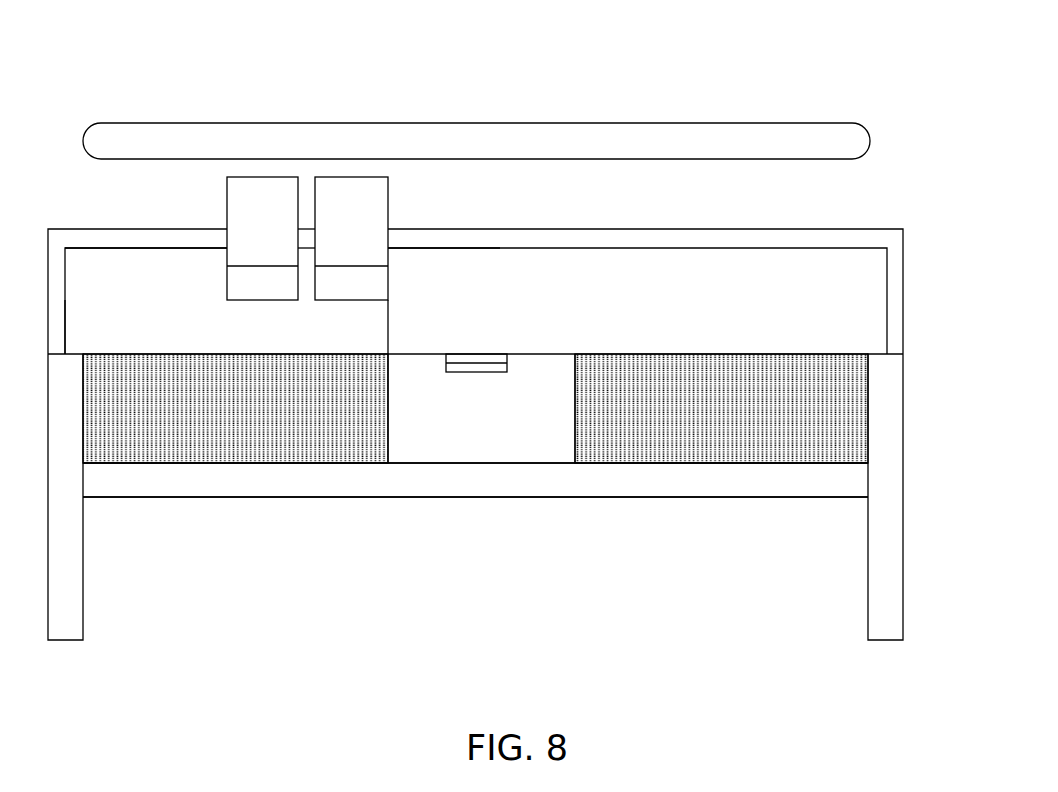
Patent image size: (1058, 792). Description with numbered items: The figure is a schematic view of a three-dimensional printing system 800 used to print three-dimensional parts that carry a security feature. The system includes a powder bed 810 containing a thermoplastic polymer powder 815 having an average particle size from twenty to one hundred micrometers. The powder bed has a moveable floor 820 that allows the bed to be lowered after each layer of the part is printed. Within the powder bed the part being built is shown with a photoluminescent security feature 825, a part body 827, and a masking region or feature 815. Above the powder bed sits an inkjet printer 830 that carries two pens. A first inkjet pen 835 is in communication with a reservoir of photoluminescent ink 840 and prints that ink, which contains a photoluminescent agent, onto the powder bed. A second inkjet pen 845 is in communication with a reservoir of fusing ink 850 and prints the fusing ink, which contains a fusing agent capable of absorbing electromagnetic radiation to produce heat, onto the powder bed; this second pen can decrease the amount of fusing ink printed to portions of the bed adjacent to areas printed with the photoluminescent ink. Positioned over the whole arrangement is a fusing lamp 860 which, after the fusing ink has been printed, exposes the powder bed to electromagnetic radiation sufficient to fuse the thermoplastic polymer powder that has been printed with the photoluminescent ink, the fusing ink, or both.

The 3-dimensional printing system 800 is at (153, 56).
The powder bed 810 is at (777, 527).
The thermoplastic polymer powder 815 is at (463, 360).
The moveable floor 820 is at (602, 480).
The photoluminescent security feature 825 is at (495, 369).
The part body 827 is at (535, 377).
The inkjet printer 830 is at (870, 210).
The first inkjet pen 835 is at (200, 286).
The reservoir of photoluminescent ink 840 is at (250, 208).
The second inkjet pen 845 is at (405, 269).
The reservoir of fusing ink 850 is at (360, 195).
The fusing lamp 860 is at (564, 143).